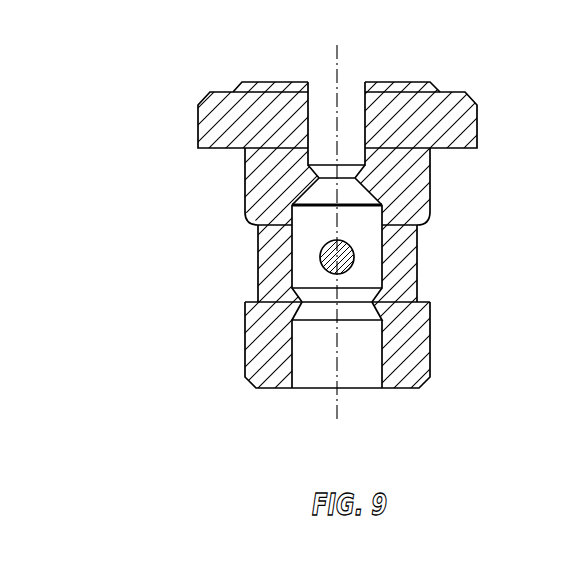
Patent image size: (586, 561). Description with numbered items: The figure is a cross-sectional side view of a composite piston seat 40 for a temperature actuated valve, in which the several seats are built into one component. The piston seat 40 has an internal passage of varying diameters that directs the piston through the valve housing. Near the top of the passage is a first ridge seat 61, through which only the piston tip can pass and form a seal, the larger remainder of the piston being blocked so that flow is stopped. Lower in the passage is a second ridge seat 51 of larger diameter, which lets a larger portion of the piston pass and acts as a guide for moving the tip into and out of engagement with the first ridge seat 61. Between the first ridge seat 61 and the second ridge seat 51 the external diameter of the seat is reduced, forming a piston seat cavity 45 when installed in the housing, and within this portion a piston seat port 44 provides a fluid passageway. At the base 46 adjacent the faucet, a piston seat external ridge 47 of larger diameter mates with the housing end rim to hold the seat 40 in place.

The piston seat 40 is at (104, 199).
The piston seat port 44 is at (354, 257).
The piston seat cavity 45 is at (244, 224).
The base 46 is at (265, 82).
The piston seat external ridge 47 is at (198, 110).
The second ridge seat 51 is at (376, 308).
The first ridge seat 61 is at (360, 179).